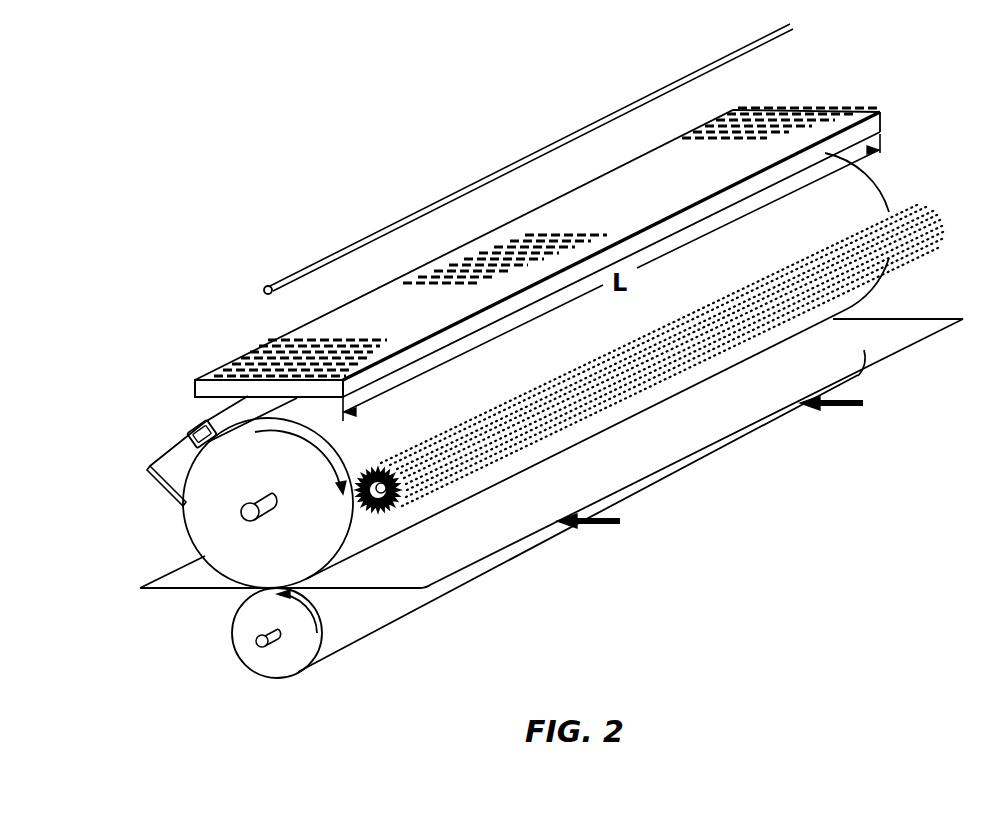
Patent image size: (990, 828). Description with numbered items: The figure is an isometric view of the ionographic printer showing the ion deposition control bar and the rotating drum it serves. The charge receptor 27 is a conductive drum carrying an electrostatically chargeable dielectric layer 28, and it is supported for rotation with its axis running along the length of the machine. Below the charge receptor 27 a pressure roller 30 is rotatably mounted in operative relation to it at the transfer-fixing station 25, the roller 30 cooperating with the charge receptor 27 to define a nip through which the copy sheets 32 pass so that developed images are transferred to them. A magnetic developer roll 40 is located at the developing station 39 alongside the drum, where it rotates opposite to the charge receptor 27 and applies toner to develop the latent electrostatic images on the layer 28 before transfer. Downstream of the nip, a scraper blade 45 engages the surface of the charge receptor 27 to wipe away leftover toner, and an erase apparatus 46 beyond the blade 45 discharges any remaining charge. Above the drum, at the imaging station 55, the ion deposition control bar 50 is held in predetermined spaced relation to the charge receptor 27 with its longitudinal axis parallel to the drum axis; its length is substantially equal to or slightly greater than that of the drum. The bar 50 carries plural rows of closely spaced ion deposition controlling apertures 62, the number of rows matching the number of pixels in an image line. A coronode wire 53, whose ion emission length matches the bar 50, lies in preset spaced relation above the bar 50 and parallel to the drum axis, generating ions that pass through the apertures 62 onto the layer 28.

The transfer-fixing station 25 is at (230, 602).
The dielectric charge receptor 27 is at (897, 291).
The dielectric layer 28 is at (387, 527).
The pressure roller 30 is at (236, 682).
The copy sheets 32 is at (412, 593).
The developing station 39 is at (382, 433).
The magnetic developer roll 40 is at (916, 210).
The scraper blade 45 is at (152, 467).
The erase apparatus 46 is at (195, 435).
The ion deposition control bar 50 is at (537, 252).
The coronode wire 53 is at (625, 108).
The imaging station 55 is at (283, 405).
The ion deposition controlling apertures 62 is at (290, 350).